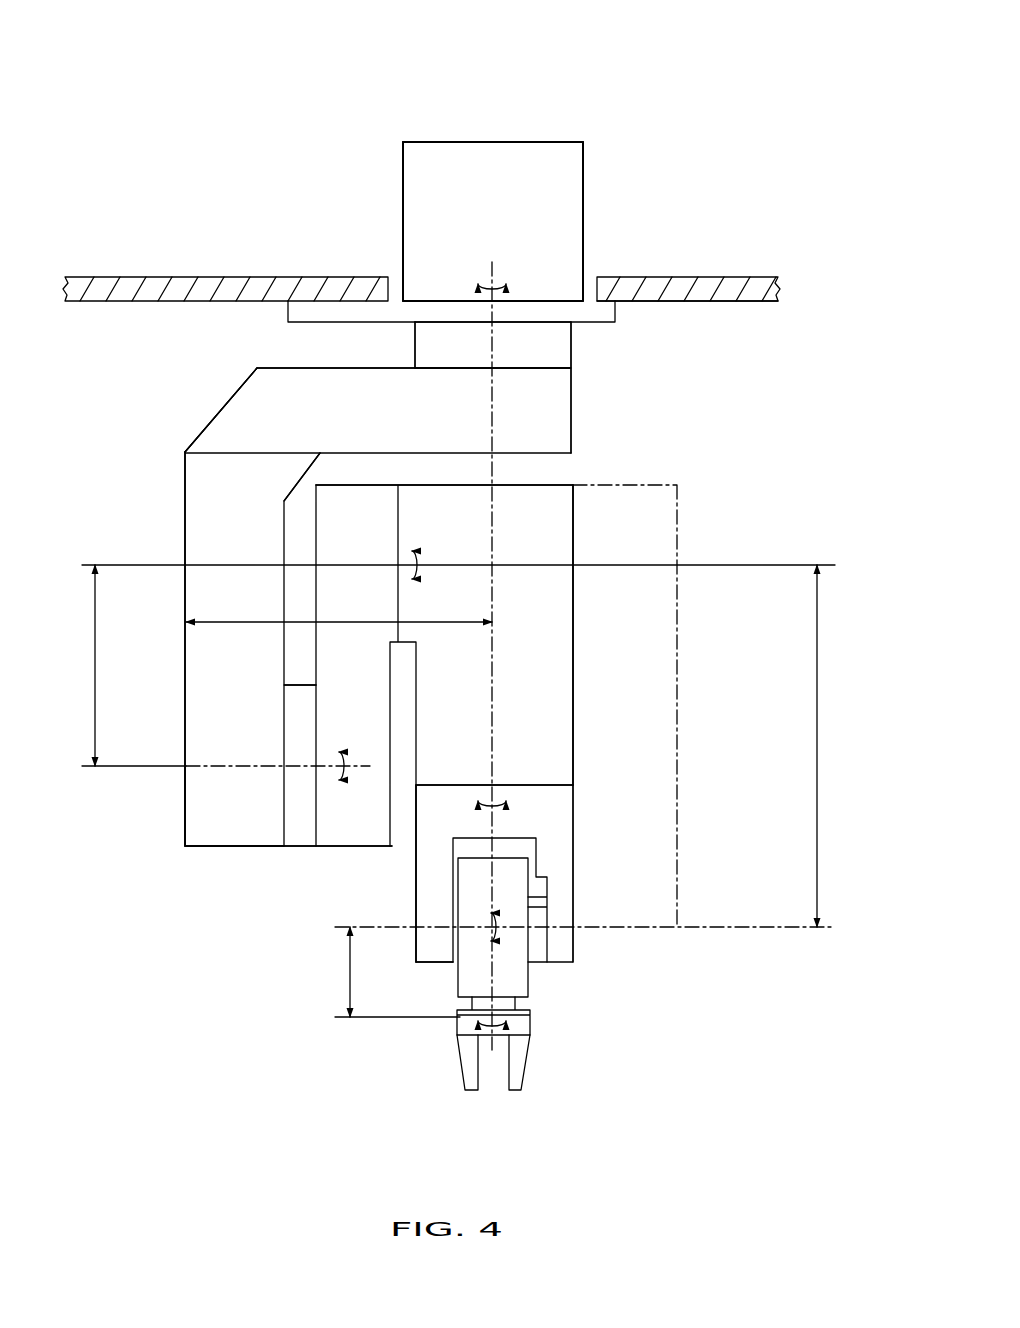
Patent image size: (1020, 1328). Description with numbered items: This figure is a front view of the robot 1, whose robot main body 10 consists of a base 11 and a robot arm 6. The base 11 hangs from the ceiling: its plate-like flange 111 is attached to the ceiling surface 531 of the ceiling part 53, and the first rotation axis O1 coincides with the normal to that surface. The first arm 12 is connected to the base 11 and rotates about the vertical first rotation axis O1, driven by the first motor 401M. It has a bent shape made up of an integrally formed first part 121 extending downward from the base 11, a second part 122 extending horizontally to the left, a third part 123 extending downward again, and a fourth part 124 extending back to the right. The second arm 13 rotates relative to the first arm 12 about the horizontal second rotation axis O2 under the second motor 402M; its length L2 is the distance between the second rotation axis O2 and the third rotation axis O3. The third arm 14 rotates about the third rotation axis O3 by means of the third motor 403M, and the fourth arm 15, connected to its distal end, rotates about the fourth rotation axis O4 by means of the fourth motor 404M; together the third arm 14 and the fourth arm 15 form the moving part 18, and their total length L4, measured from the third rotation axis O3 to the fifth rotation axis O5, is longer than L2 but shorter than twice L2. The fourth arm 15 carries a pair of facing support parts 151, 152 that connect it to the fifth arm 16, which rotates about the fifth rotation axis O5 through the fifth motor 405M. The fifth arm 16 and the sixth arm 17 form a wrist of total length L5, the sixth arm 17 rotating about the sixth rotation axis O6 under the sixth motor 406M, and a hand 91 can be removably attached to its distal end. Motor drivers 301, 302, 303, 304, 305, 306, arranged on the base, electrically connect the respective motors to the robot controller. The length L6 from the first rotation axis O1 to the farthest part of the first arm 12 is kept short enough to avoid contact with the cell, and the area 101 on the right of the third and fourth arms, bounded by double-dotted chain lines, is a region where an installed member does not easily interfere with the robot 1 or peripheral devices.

The robot 1 is at (700, 62).
The robot main body 10 is at (695, 133).
The base 11 is at (600, 330).
The flange 111 is at (610, 313).
The first arm 12 is at (83, 336).
The first part 121 is at (437, 345).
The second part 122 is at (242, 414).
The third part 123 is at (214, 496).
The fourth part 124 is at (294, 713).
The second arm 13 is at (345, 850).
The third arm 14 is at (577, 505).
The fourth arm 15 is at (578, 806).
The support part 151 is at (432, 890).
The support part 152 is at (560, 885).
The fifth arm 16 is at (453, 977).
The sixth arm 17 is at (537, 1012).
The moving part 18 is at (577, 530).
The robot arm 6 is at (184, 658).
The ceiling part 53 is at (760, 288).
The ceiling surface 531 is at (733, 302).
The hand 91 is at (525, 1068).
The area 101 is at (677, 522).
The motor driver 301 is at (440, 232).
The motor driver 302 is at (420, 221).
The motor driver 303 is at (420, 221).
The motor driver 304 is at (420, 212).
The motor driver 305 is at (420, 199).
The motor driver 306 is at (420, 186).
The first motor 401M is at (540, 347).
The second motor 402M is at (232, 800).
The third motor 403M is at (440, 573).
The fourth motor 404M is at (500, 683).
The fifth motor 405M is at (495, 812).
The sixth motor 406M is at (510, 917).
The first rotation axis O1 is at (540, 300).
The second rotation axis O2 is at (270, 767).
The third rotation axis O3 is at (430, 565).
The fourth rotation axis O4 is at (493, 752).
The fifth rotation axis O5 is at (533, 930).
The sixth rotation axis O6 is at (493, 985).
The length of the second arm L2 is at (80, 665).
The total length of the third arm and the fourth arm L4 is at (831, 746).
The total length of the fifth arm and the sixth arm L5 is at (391, 972).
The length between the first rotation axis and the farthest part of the first arm L6 is at (339, 607).